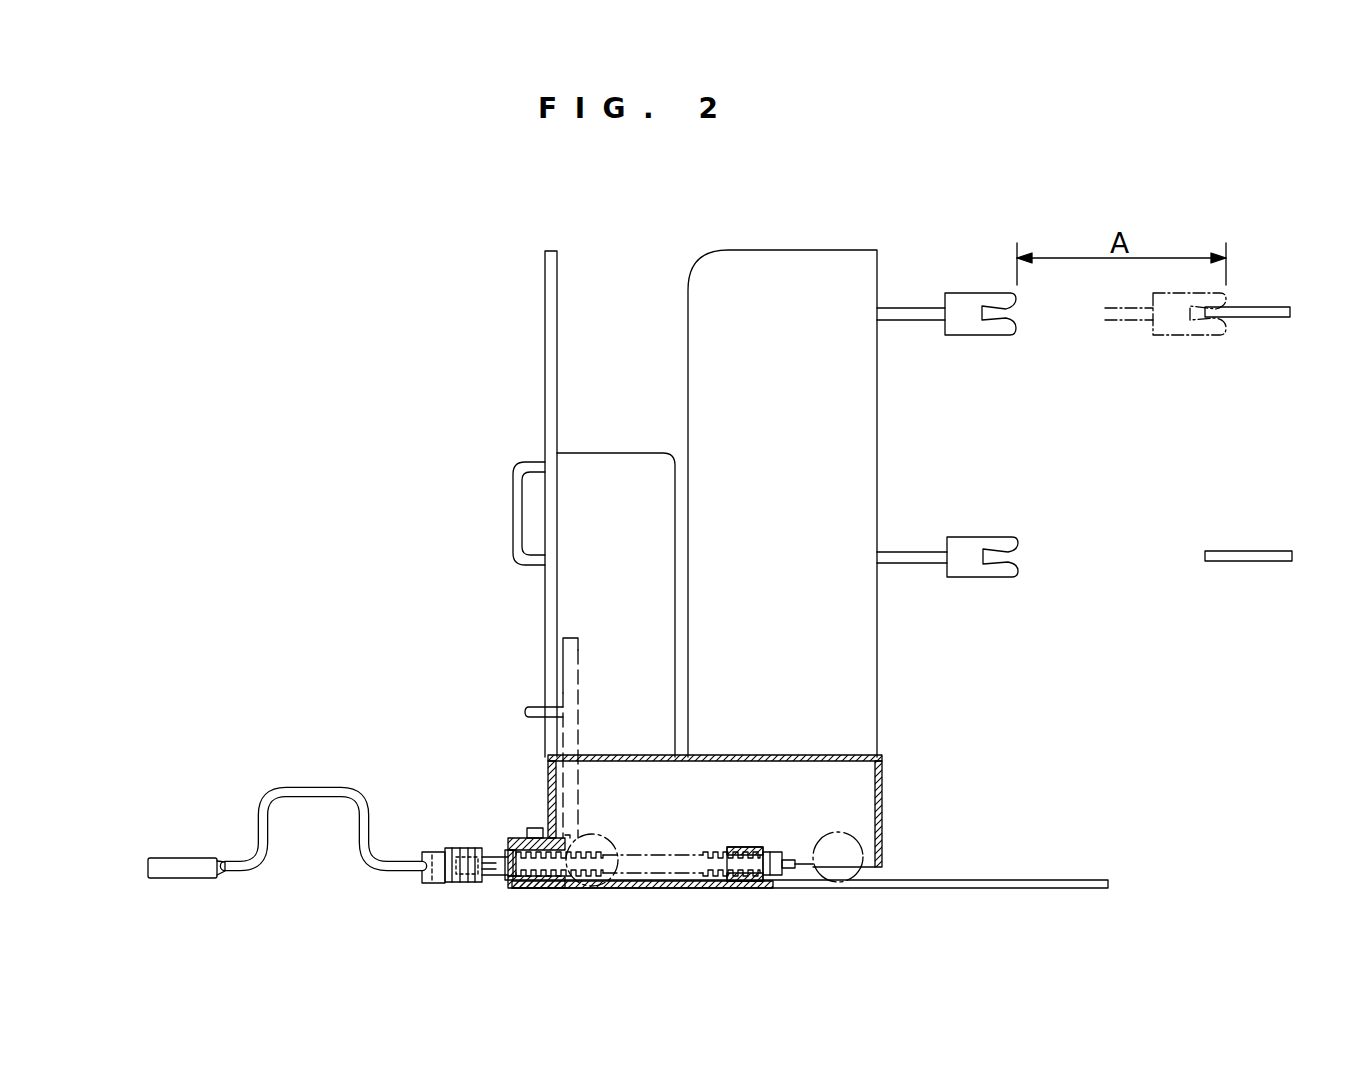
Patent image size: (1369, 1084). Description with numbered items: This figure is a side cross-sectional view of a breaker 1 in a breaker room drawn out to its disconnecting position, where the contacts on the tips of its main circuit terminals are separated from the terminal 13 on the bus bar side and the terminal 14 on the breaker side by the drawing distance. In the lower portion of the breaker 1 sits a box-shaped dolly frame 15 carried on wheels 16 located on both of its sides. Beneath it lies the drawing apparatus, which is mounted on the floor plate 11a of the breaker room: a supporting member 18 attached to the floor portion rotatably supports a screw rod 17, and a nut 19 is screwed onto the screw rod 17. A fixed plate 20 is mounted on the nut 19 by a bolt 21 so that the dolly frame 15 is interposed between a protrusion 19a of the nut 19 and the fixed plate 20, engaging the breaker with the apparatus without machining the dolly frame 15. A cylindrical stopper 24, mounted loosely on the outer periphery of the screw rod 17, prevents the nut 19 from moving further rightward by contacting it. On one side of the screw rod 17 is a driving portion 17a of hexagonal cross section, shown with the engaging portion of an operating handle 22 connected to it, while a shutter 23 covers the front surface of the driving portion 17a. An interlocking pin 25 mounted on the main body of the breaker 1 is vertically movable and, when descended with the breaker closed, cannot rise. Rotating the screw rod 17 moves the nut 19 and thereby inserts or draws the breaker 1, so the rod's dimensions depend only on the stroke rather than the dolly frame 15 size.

The breaker 1 is at (815, 250).
The terminal on bus bar side 13 is at (1270, 307).
The terminal on breaker side 14 is at (1240, 561).
The dolly frame 15 is at (883, 838).
The wheels 16 is at (855, 882).
The screw rod 17 is at (693, 875).
The driving portion 17a is at (473, 885).
The supporting member 18 is at (657, 888).
The nut 19 is at (581, 887).
The protrusion 19a is at (567, 835).
The fixed plate 20 is at (510, 838).
The bolt 21 is at (530, 828).
The operating handle 22 is at (370, 868).
The shutter 23 is at (440, 897).
The stopper 24 is at (755, 885).
The interlocking pin 25 is at (563, 672).
The floor plate 11a is at (1038, 888).